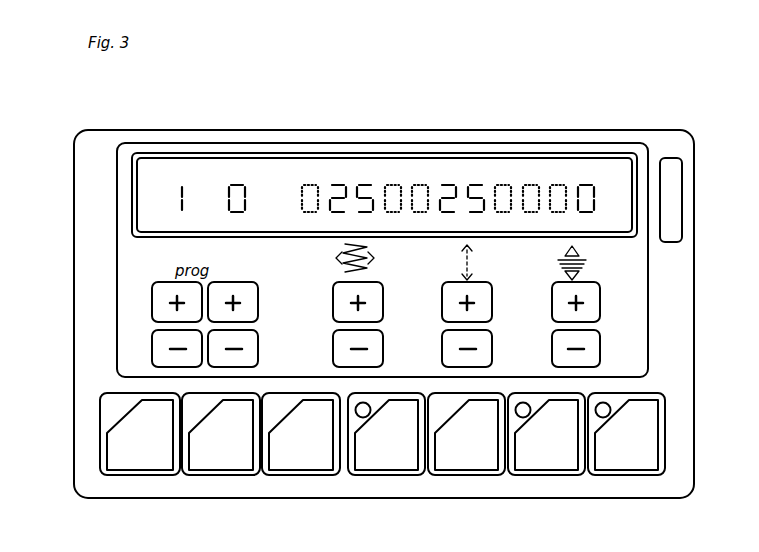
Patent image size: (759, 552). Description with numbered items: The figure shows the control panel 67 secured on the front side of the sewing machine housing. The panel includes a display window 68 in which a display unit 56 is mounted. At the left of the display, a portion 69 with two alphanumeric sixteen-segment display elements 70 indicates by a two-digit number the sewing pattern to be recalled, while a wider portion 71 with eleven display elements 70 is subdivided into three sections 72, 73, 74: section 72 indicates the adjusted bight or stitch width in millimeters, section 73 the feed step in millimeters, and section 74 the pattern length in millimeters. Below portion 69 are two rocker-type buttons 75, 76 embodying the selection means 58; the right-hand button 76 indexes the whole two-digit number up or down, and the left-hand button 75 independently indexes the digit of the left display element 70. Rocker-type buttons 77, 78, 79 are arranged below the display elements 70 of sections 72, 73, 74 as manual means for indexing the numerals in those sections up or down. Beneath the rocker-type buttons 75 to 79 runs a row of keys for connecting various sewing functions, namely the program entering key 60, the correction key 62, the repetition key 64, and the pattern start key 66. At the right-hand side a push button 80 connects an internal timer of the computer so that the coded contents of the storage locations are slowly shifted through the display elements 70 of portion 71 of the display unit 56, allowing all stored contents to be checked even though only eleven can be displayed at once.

The display unit 56 is at (569, 155).
The selection means 58 is at (130, 339).
The program entering key 60 is at (157, 462).
The correction key 62 is at (231, 462).
The repetition key 64 is at (307, 462).
The pattern start key 66 is at (455, 467).
The control panel 67 is at (683, 357).
The display window 68 is at (270, 152).
The portion 69 is at (246, 184).
The display element 70 is at (304, 214).
The portion 71 is at (600, 184).
The section 72 is at (376, 214).
The section 73 is at (486, 214).
The section 74 is at (596, 214).
The rocker-type button 75 is at (160, 320).
The rocker-type button 76 is at (252, 321).
The rocker-type button 77 is at (376, 323).
The rocker-type button 78 is at (485, 323).
The rocker-type button 79 is at (594, 324).
The push button 80 is at (673, 212).